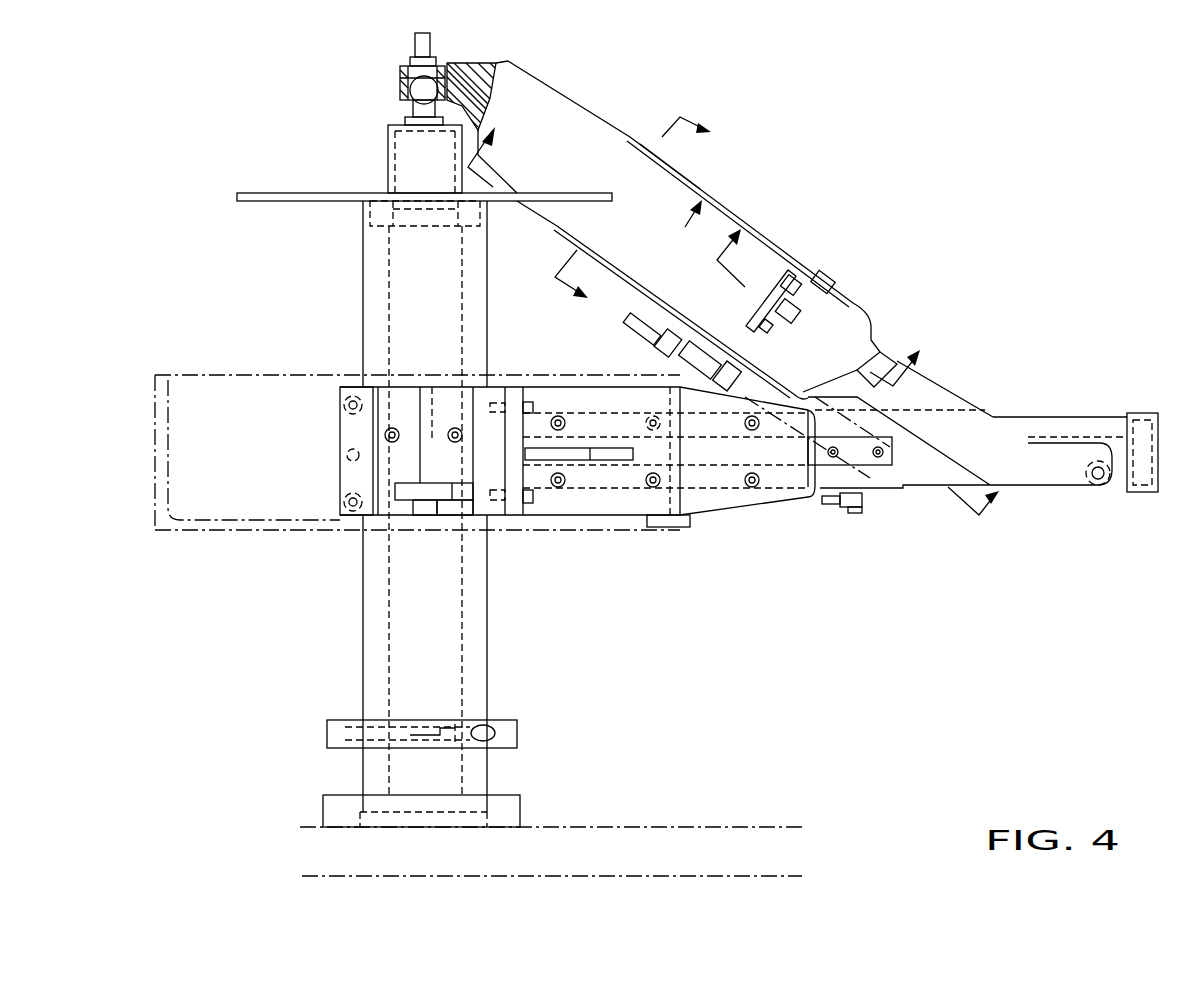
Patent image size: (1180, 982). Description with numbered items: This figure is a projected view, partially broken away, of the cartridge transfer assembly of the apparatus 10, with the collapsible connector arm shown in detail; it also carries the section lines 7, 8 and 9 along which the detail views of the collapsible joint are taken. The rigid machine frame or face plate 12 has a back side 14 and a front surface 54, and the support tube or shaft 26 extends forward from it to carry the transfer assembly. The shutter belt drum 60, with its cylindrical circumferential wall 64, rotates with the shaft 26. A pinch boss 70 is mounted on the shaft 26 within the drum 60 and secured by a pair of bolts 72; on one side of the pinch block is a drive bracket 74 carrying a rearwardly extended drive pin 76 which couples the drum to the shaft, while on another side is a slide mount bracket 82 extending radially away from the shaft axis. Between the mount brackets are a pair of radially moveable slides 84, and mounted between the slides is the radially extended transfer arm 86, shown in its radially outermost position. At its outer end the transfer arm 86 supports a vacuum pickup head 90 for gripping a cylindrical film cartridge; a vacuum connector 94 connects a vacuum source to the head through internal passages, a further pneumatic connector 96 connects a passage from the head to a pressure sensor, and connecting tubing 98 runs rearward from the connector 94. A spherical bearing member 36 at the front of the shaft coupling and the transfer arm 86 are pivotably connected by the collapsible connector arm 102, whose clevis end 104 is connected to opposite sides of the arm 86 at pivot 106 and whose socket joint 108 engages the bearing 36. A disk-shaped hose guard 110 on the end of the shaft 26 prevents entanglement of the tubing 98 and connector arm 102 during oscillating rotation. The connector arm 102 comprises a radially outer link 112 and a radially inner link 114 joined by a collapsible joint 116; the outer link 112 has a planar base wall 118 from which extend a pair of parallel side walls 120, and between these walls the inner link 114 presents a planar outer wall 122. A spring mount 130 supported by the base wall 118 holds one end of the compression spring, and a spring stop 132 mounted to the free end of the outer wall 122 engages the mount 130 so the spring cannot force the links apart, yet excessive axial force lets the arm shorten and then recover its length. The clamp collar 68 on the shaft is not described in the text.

The apparatus 10 is at (209, 281).
The face plate 12 is at (652, 851).
The back side 14 is at (742, 877).
The support tube or shaft 26 is at (487, 680).
The spherical bearing member 36 is at (408, 96).
The front surface 54 is at (590, 822).
The shutter belt drum 60 is at (184, 531).
The cylindrical circumferential wall 64 is at (268, 532).
The clamp collar 68 is at (327, 735).
The pinch boss 70 is at (353, 430).
The bolts 72 is at (343, 407).
The drive bracket 74 is at (480, 517).
The drive pin 76 is at (423, 511).
The slide mount bracket 82 is at (638, 500).
The radially moveable slides 84 is at (818, 462).
The transfer arm 86 is at (920, 470).
The vacuum pickup head 90 is at (1152, 497).
The vacuum connector 94 is at (683, 360).
The pneumatic connector 96 is at (876, 498).
The connecting conduit or tubing 98 is at (627, 325).
The collapsible connector arm 102 is at (786, 219).
The clevis end 104 is at (1058, 470).
The pivot 106 is at (1104, 484).
The socket joint 108 is at (412, 72).
The hose guard 110 is at (292, 203).
The radially outer link 112 is at (887, 343).
The radially inner link 114 is at (550, 106).
The collapsible joint 116 is at (708, 200).
The planar base wall 118 is at (832, 300).
The side walls 120 is at (565, 236).
The planar outer wall 122 is at (630, 173).
The spring mount 130 is at (848, 312).
The spring stop 132 is at (805, 276).
The section line 7- 7 is at (740, 318).
The section line 8- 8 is at (641, 213).
The section line 9- 9 is at (813, 293).